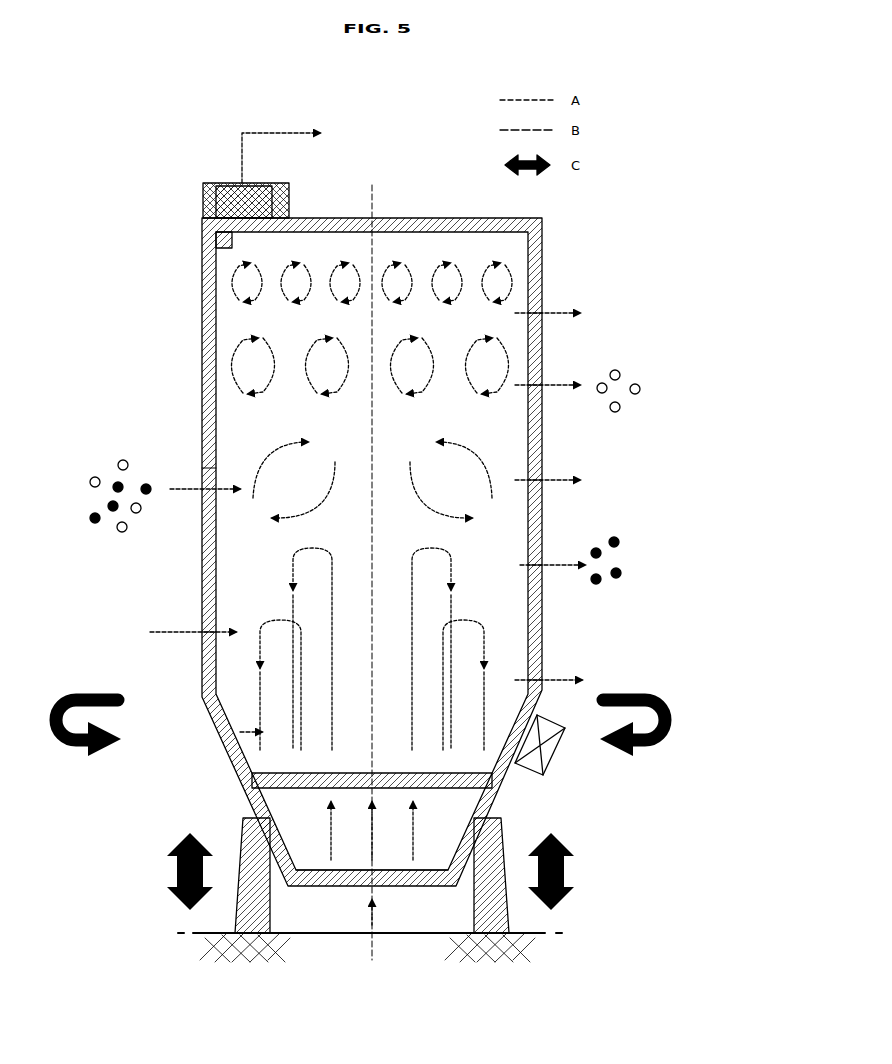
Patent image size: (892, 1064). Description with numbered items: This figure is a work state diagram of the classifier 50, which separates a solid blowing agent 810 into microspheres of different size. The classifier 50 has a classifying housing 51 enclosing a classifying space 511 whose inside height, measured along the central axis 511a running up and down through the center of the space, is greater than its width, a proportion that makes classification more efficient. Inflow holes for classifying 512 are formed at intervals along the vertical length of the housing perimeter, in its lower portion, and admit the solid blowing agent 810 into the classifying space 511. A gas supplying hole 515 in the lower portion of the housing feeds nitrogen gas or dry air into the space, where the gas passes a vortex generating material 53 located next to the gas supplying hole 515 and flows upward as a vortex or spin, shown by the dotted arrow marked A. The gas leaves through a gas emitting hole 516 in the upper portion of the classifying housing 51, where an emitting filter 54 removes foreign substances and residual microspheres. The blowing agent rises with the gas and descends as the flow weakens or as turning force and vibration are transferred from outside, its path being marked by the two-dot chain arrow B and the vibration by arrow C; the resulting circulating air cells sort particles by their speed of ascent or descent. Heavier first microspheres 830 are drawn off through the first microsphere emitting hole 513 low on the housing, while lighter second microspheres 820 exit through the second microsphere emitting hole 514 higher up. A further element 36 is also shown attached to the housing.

The classifier 50 is at (178, 150).
The classifying housing 51 is at (204, 352).
The classifying space 511 is at (248, 422).
The central axis 511a is at (372, 200).
The inflow holes for classifying 512 is at (235, 732).
The first microsphere emitting hole 513 is at (560, 620).
The second microsphere emitting hole 514 is at (540, 383).
The gas supplying hole 515 is at (372, 874).
The gas emitting hole 516 is at (240, 245).
The vortex generating material 53 is at (300, 788).
The emitting filter 54 is at (217, 183).
The valve unit 36 is at (554, 748).
The solid blowing agent 810 is at (102, 458).
The second microspheres 820 is at (636, 418).
The first microspheres 830 is at (612, 585).